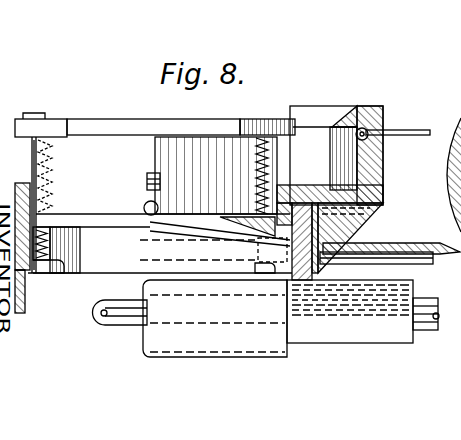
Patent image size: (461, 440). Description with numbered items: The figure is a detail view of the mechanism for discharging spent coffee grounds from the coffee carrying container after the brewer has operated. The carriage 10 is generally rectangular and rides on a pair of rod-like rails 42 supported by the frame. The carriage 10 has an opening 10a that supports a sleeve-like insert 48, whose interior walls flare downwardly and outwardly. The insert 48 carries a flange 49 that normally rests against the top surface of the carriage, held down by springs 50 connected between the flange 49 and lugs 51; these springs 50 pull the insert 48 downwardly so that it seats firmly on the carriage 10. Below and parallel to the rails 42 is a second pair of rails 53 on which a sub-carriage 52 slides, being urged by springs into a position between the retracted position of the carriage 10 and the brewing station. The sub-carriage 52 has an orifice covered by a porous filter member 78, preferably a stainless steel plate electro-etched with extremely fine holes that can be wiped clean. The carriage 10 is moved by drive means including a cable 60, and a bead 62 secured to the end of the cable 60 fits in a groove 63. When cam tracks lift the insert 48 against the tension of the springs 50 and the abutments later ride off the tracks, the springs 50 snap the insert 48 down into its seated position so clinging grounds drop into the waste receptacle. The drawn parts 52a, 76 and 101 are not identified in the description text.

The carriage 10 is at (13, 182).
The opening 10a is at (36, 200).
The rails 42 is at (414, 240).
The sleeve-like insert 48 is at (113, 147).
The flange 49 is at (237, 123).
The springs 50 is at (50, 152).
The lugs 51 is at (63, 273).
The sub-carriage 52 is at (380, 340).
The shaft extension 52a is at (288, 338).
The rails 53 is at (437, 326).
The cable 60 is at (408, 132).
The bead 62 is at (362, 128).
The groove 63 is at (377, 108).
The flange 76 is at (18, 313).
The porous filter member 78 is at (403, 281).
The block 101 is at (310, 133).